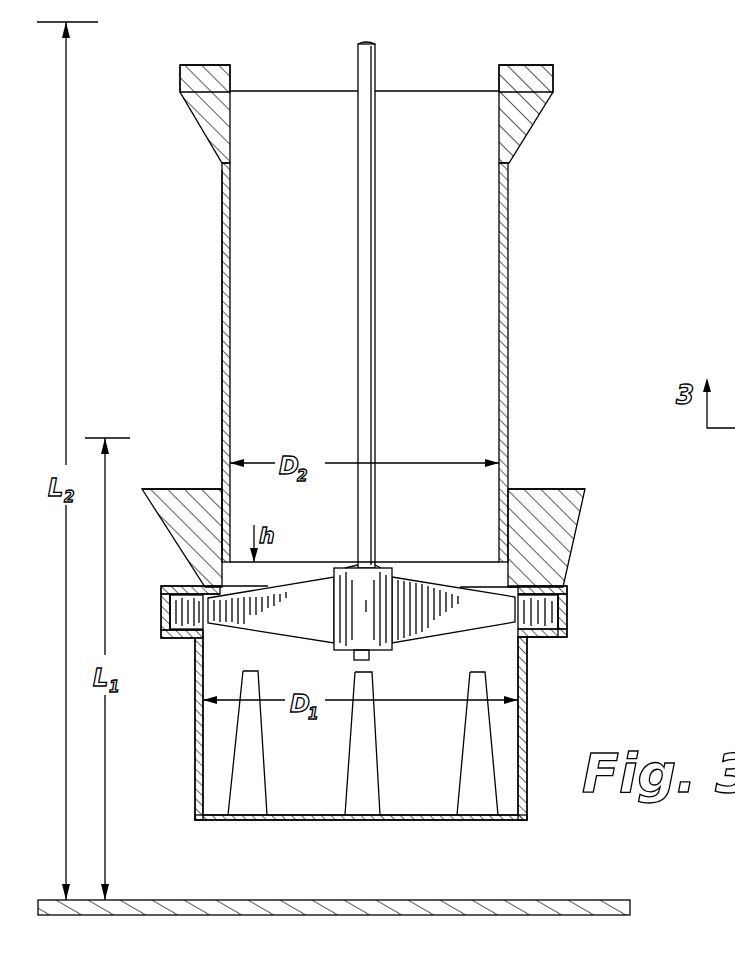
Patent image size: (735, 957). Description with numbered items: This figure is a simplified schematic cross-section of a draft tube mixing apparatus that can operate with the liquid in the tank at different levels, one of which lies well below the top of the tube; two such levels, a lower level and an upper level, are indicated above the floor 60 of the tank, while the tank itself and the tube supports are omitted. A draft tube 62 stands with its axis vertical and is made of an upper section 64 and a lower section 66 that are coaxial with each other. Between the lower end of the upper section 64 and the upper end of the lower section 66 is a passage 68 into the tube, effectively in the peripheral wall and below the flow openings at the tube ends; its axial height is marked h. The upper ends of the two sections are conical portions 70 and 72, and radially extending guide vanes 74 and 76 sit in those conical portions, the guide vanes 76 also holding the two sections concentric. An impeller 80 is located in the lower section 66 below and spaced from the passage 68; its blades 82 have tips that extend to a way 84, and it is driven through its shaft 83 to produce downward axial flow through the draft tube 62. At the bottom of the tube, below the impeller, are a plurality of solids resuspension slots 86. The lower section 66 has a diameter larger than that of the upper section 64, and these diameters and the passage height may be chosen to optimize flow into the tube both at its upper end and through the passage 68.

The floor 60 is at (416, 900).
The draft tube 62 is at (509, 300).
The upper section 64 is at (222, 362).
The lower section 66 is at (195, 720).
The passage 68 is at (465, 578).
The conical portion 70 is at (528, 138).
The conical portion 72 is at (567, 545).
The guide vanes 74 is at (212, 65).
The guide vanes 76 is at (200, 489).
The impeller 80 is at (378, 566).
The blades 82 is at (292, 630).
The shaft 83 is at (358, 152).
The way 84 is at (553, 633).
The solids resuspension slots 86 is at (255, 726).